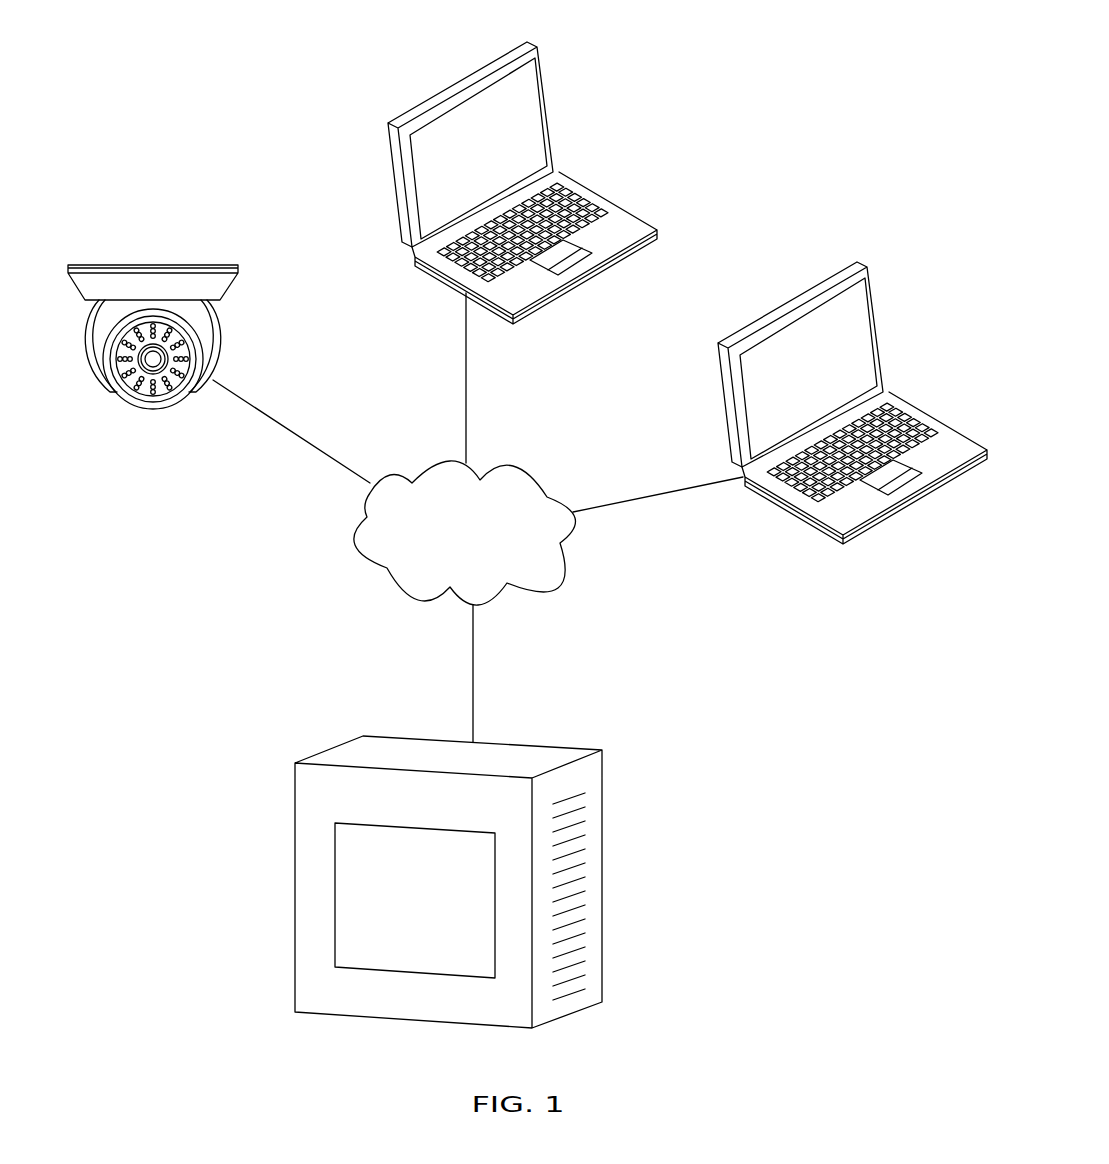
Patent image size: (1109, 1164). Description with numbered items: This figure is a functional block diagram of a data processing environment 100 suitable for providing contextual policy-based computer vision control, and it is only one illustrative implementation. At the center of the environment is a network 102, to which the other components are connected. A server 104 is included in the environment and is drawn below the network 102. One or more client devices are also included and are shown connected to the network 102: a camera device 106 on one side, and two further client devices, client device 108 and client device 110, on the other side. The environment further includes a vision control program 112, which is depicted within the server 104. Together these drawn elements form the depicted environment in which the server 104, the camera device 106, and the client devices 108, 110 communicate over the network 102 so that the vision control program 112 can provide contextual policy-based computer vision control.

The data processing environment 100 is at (842, 122).
The network 102 is at (563, 547).
The server 104 is at (587, 748).
The camera device 106 is at (220, 330).
The client device 108 is at (600, 200).
The client device 110 is at (933, 420).
The vision control program 112 is at (392, 955).